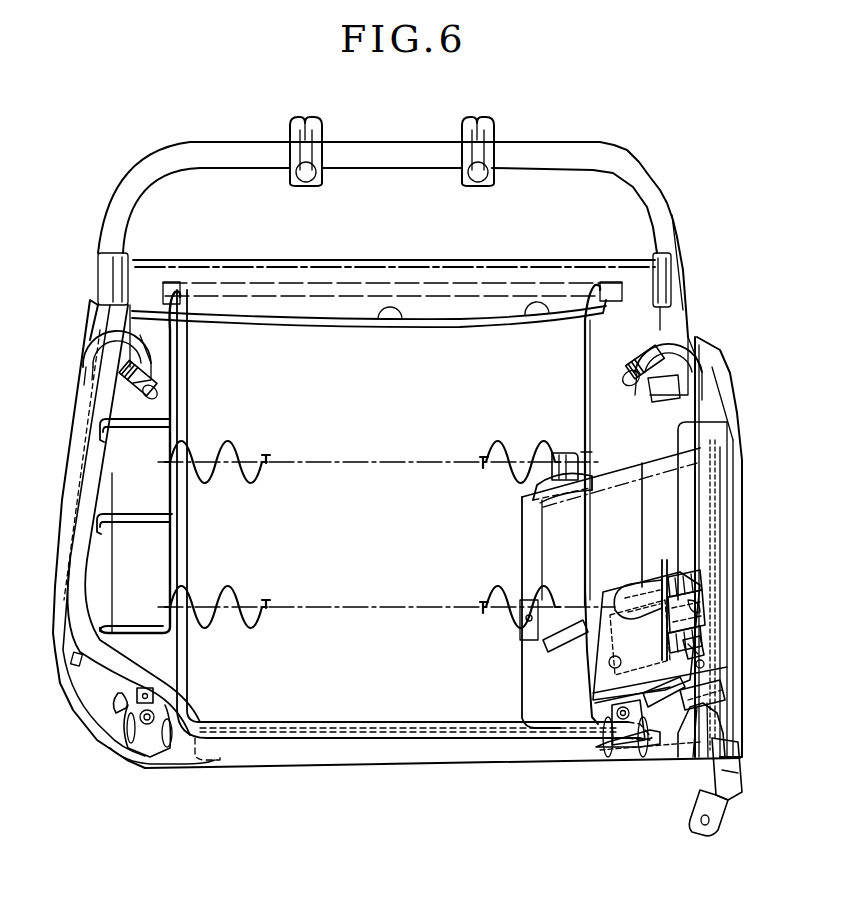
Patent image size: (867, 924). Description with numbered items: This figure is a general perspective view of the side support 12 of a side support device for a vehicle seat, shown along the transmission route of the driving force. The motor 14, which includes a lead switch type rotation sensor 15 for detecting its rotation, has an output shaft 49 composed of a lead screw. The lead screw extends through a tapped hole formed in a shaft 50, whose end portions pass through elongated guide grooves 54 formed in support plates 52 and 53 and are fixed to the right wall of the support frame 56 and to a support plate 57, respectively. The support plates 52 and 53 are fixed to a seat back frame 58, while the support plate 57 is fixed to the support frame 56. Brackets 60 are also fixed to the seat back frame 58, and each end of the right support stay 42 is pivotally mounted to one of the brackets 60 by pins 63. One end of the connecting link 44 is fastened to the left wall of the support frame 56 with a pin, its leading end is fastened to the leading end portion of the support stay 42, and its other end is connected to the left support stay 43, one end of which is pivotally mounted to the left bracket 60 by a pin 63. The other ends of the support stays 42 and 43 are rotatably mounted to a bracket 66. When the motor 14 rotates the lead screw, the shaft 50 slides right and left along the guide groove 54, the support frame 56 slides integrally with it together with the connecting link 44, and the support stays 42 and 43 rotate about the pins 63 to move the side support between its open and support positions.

The side support 12 is at (753, 389).
The motor 14 is at (585, 532).
The rotation sensor 15 is at (543, 483).
The support stay 42 is at (702, 355).
The support stay 43 is at (83, 358).
The connecting link 44 is at (375, 720).
The output shaft 49 is at (585, 663).
The shaft 50 is at (612, 586).
The support plate 52 is at (697, 582).
The support plate 53 is at (708, 648).
The guide groove 54 is at (677, 577).
The support frame 56 is at (626, 580).
The support plate 57 is at (690, 672).
The seat back frame 58 is at (675, 223).
The bracket 60 is at (140, 757).
The pin 63 is at (130, 745).
The bracket 66 is at (140, 388).